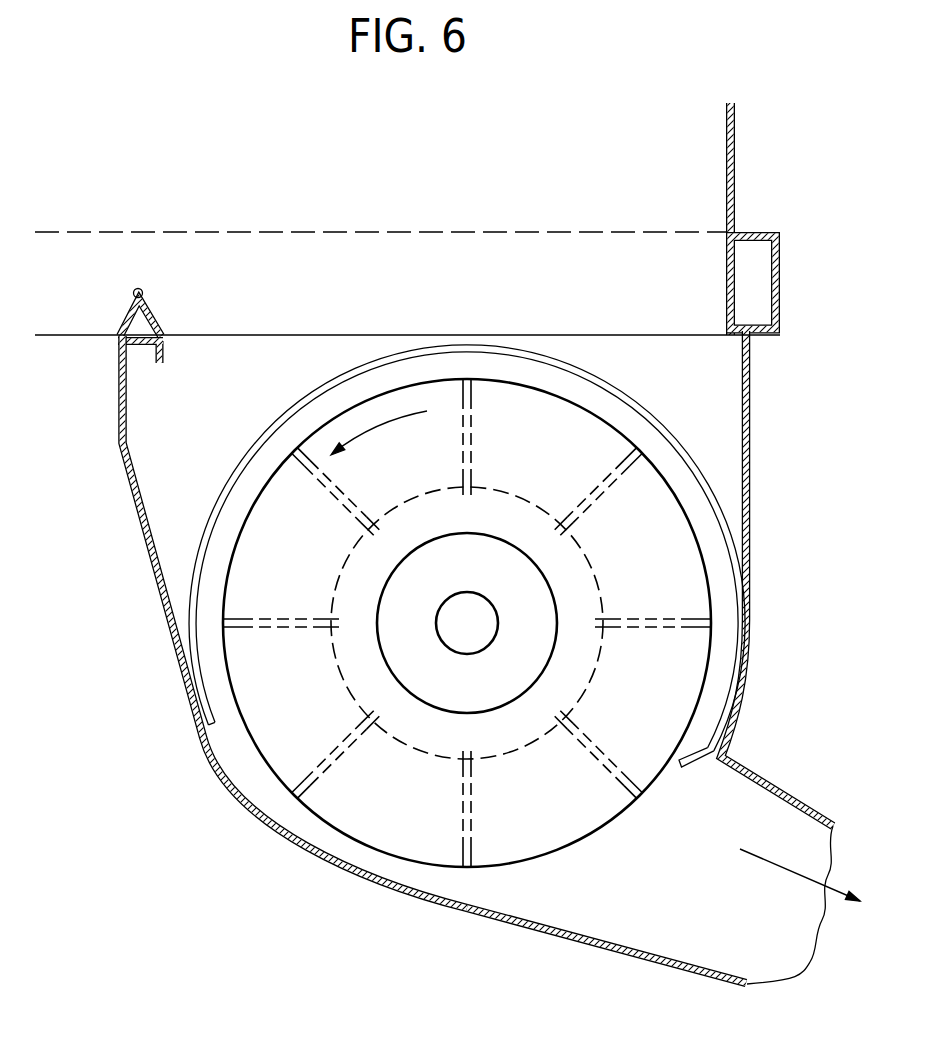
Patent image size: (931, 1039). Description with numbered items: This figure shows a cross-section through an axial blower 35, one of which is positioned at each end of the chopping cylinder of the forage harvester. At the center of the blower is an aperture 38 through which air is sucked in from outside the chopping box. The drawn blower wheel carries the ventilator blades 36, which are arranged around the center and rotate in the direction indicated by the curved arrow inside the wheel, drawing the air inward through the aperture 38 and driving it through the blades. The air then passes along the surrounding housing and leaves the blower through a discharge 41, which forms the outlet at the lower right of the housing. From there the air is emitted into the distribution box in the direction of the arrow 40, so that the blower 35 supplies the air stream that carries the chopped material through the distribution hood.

The axial blower 35 is at (171, 645).
The ventilator blades 36 is at (313, 478).
The aperture 38 is at (583, 572).
The arrow 40 is at (752, 856).
The discharge 41 is at (591, 910).